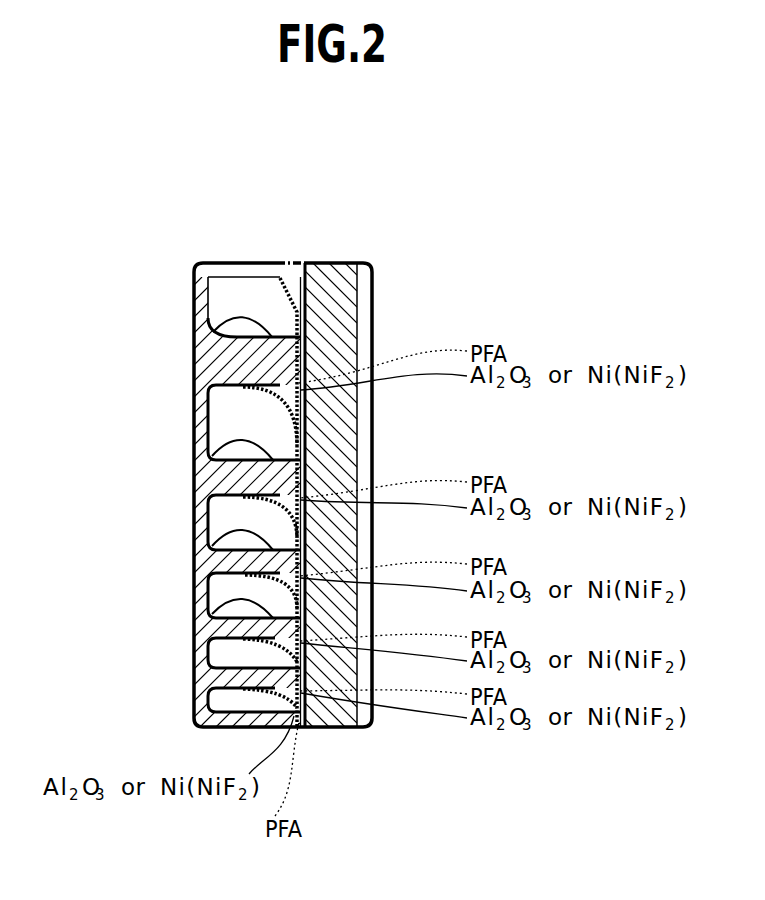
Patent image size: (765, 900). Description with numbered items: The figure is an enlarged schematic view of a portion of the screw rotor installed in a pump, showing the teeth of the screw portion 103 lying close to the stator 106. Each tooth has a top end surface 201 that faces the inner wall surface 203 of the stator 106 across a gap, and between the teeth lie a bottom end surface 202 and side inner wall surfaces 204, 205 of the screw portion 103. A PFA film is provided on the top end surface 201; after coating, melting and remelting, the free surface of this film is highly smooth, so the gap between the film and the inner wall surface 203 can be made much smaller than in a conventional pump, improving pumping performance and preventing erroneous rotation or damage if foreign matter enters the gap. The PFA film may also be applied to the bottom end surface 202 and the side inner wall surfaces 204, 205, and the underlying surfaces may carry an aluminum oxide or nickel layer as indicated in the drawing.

The screw portion 103 is at (228, 302).
The stator 106 is at (347, 413).
The top end surface 201 is at (302, 712).
The bottom end surface 202 is at (210, 693).
The inner wall surface 203 is at (296, 293).
The side inner wall surface 204 is at (235, 548).
The side inner wall surface 205 is at (245, 588).